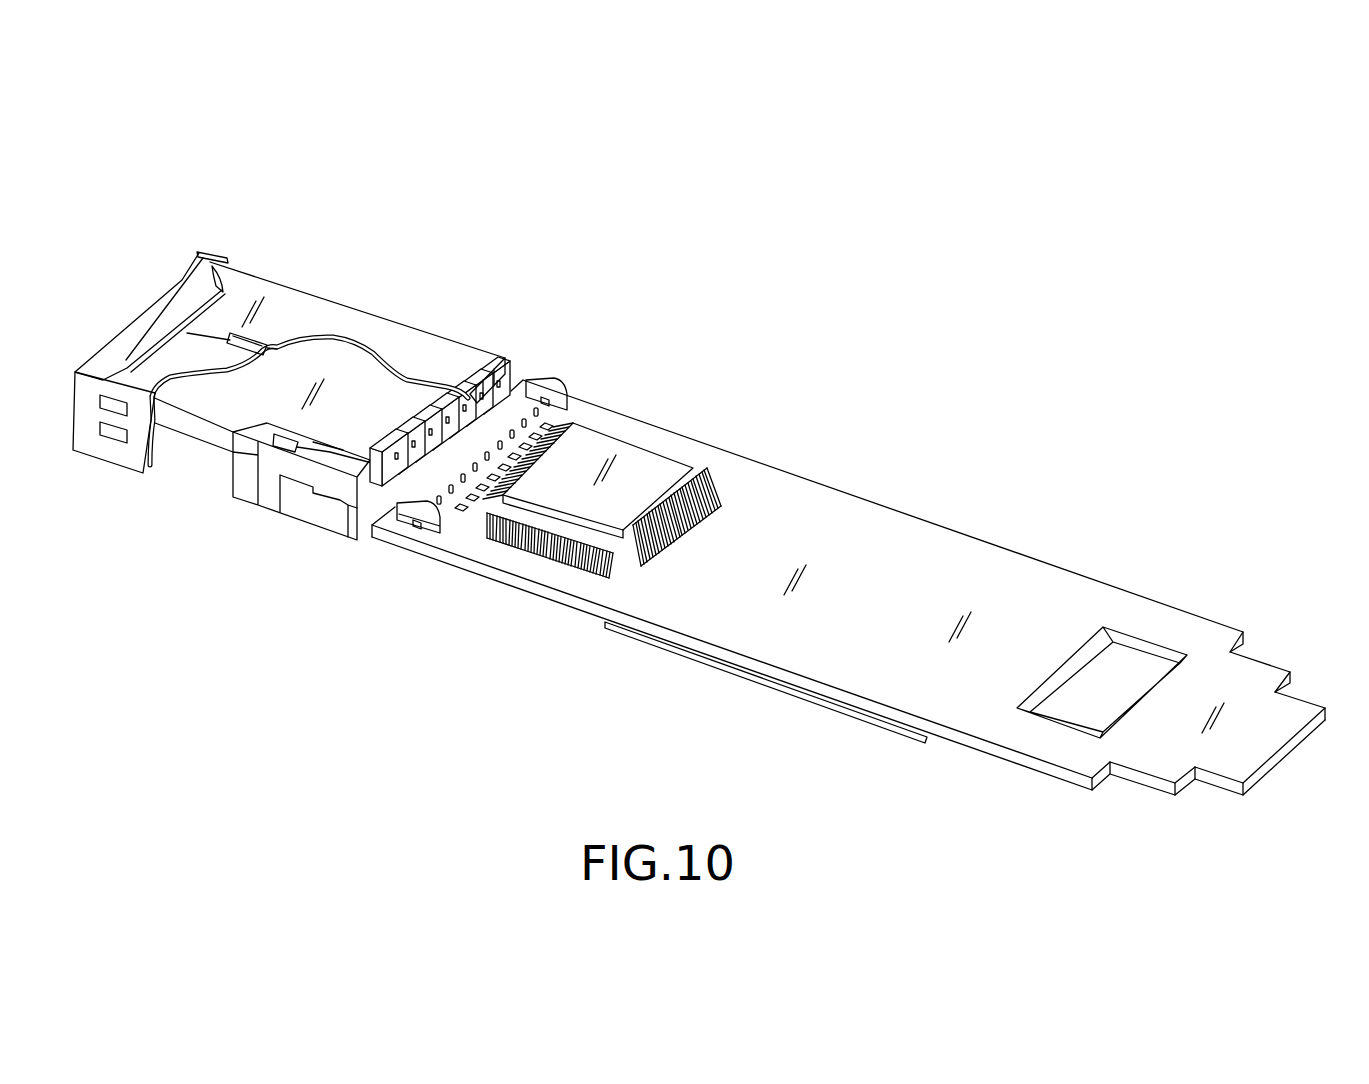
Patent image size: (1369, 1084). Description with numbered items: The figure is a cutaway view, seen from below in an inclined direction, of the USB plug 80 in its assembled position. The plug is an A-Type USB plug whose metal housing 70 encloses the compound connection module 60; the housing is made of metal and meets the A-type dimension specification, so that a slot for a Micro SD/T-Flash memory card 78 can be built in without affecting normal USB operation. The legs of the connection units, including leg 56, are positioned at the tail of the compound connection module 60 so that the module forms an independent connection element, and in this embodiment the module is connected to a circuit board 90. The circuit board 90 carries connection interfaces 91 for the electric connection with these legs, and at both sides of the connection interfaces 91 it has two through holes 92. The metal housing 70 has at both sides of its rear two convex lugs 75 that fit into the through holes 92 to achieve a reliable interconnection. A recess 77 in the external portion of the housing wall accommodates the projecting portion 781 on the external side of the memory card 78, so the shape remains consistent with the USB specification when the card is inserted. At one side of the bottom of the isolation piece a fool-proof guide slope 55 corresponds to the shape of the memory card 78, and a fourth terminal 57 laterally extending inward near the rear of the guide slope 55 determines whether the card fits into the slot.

The circuit board 90 is at (957, 557).
The connection interfaces 91 is at (545, 452).
The leg 56 is at (614, 481).
The through holes 92 is at (543, 450).
The convex lugs 75 is at (540, 383).
The USB plug 80 is at (324, 393).
The Micro SD/T-Flash memory card 78 is at (330, 437).
The compound connection module 60 is at (278, 537).
The fool-proof guide slope 55 is at (267, 423).
The fourth terminal 57 is at (308, 446).
The projecting portion 781 is at (176, 287).
The recess 77 is at (218, 262).
The metal housing 70 is at (113, 455).